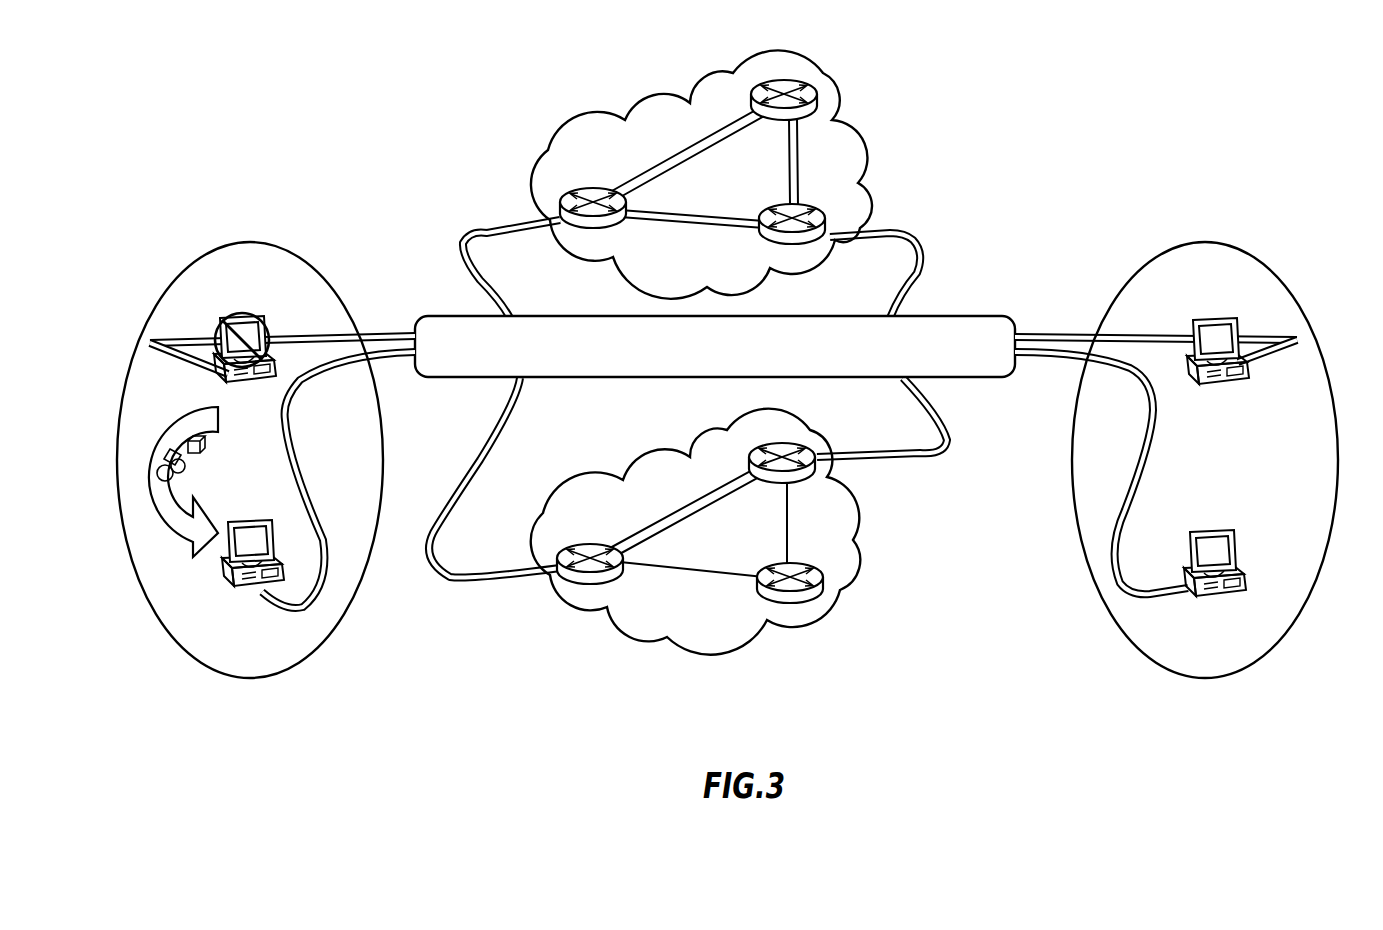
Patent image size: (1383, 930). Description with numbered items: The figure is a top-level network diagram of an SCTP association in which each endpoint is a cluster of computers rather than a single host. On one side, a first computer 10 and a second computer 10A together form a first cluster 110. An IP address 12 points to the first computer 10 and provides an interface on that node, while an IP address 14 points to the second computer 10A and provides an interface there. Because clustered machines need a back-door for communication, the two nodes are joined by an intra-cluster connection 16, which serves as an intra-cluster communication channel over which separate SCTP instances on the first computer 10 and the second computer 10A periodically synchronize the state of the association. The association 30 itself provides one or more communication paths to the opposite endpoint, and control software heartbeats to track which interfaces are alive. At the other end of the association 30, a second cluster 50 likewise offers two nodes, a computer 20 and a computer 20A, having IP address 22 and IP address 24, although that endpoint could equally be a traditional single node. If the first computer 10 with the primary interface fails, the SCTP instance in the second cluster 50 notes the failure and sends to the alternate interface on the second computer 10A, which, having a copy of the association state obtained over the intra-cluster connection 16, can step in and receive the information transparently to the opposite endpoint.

The first cluster 110 is at (143, 285).
The IP address 12 is at (142, 385).
The IP address 14 is at (285, 645).
The intra-cluster connection 16 is at (142, 470).
The first computer 10 is at (232, 318).
The second computer 10A is at (228, 582).
The association 30 is at (990, 318).
The second cluster 50 is at (1312, 268).
The IP address 24 is at (1312, 405).
The IP address 22 is at (1148, 643).
The computer 20 is at (1226, 318).
The computer 20A is at (1217, 532).